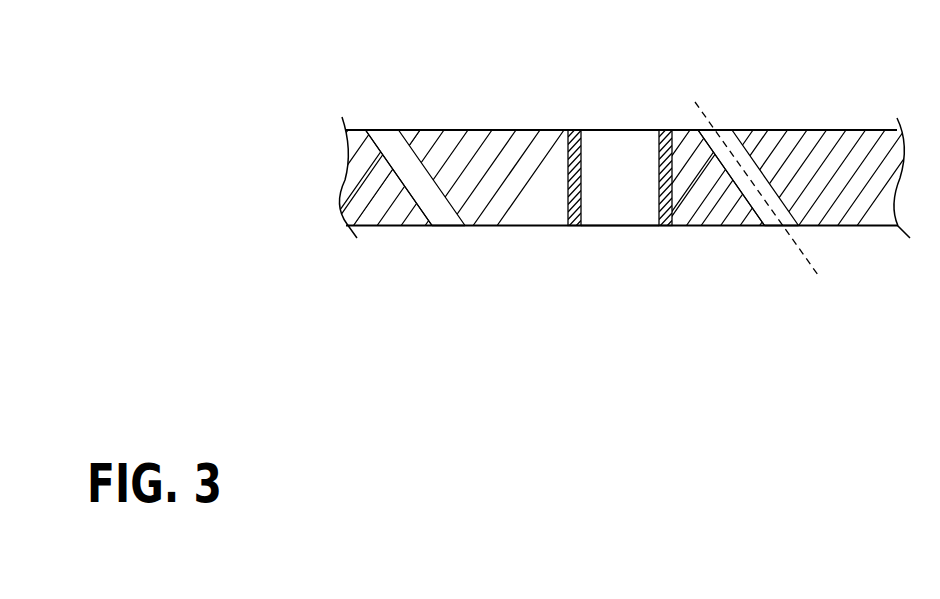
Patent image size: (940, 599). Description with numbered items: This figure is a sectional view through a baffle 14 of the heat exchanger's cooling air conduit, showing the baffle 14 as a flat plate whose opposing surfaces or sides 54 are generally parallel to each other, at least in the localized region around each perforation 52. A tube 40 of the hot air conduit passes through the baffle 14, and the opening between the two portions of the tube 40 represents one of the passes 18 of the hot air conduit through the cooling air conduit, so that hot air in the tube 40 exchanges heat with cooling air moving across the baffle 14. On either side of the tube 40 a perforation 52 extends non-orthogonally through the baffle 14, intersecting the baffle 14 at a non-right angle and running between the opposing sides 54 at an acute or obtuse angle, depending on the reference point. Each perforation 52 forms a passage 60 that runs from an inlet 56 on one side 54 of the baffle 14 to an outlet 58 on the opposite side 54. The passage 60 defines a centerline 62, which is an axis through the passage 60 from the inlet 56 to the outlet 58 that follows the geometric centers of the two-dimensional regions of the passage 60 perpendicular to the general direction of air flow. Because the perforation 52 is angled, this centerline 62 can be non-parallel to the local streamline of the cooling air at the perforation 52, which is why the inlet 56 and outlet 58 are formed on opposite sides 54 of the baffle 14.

The baffle 14 is at (832, 100).
The pass 18 is at (625, 193).
The tube 40 is at (573, 130).
The perforation 52 is at (382, 125).
The side 54 is at (797, 130).
The inlet 56 is at (366, 128).
The outlet 58 is at (447, 227).
The passage 60 is at (404, 188).
The centerline 62 is at (805, 258).